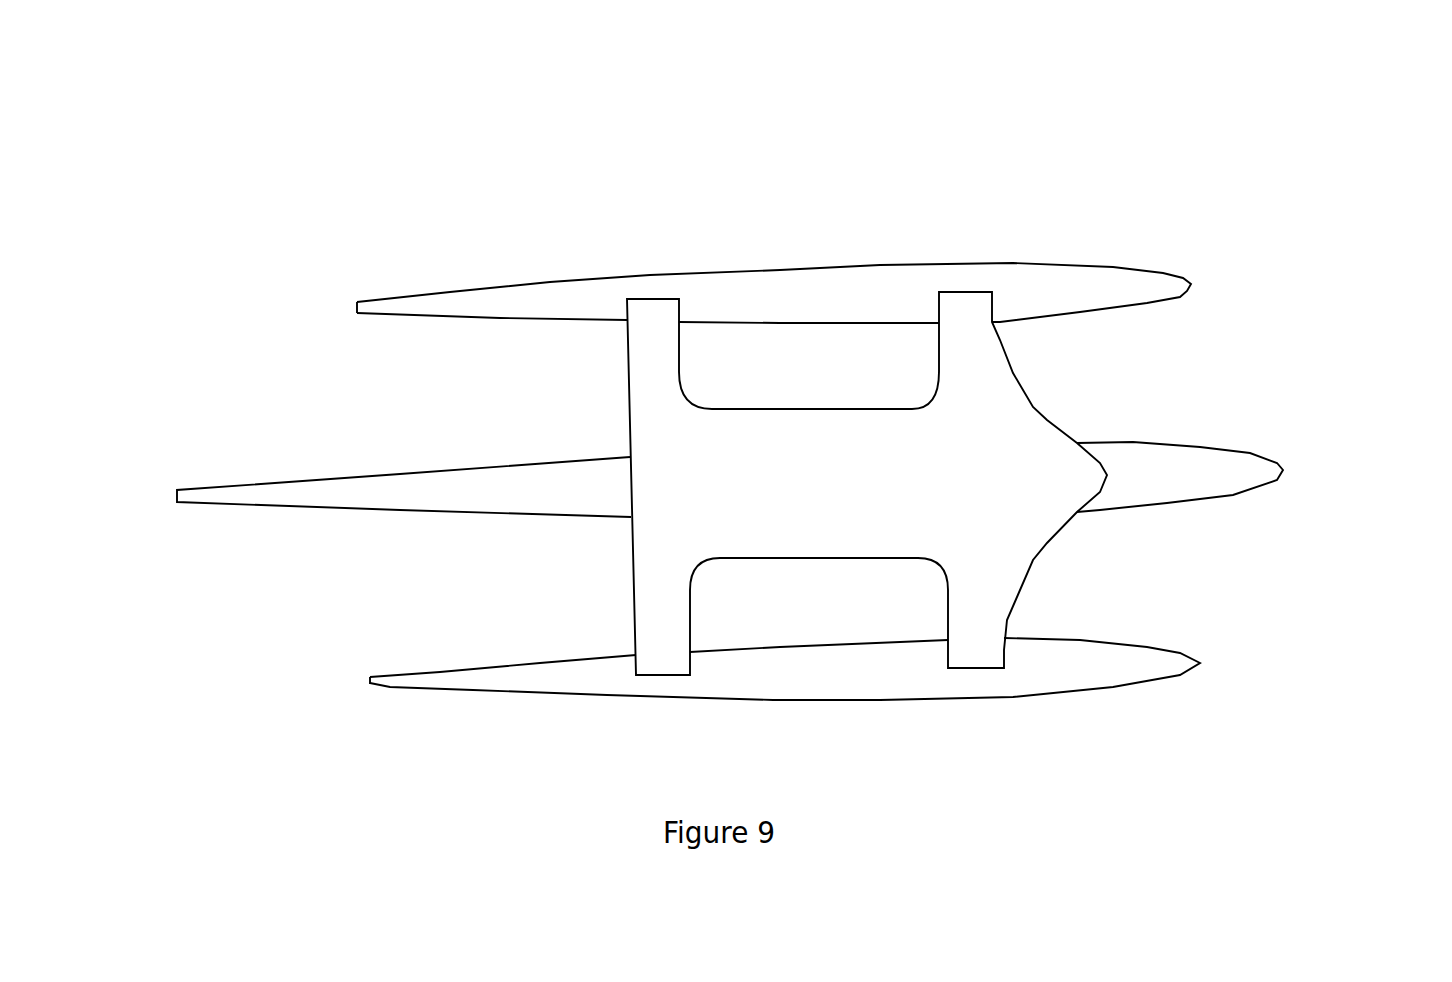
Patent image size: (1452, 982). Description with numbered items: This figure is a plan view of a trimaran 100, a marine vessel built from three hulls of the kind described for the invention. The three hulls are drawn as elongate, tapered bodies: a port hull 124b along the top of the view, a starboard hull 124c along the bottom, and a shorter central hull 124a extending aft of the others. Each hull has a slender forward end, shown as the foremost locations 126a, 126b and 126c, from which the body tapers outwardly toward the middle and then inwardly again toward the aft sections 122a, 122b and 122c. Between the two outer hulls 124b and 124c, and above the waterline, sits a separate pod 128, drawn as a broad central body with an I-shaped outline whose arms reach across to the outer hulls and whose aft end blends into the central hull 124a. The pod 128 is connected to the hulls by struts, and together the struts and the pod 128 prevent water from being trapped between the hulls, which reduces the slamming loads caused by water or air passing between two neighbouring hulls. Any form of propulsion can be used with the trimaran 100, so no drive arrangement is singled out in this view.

The trimaran 100 is at (1213, 164).
The pod 128 is at (836, 478).
The wing 124a is at (1247, 468).
The wing 124b is at (1157, 285).
The wing 124c is at (1158, 668).
The wing root section 122a is at (1136, 470).
The wing root section 122b is at (1027, 285).
The wing root section 122c is at (1025, 672).
The wing tip 126a is at (288, 496).
The wing tip 126b is at (460, 312).
The wing tip 126c is at (403, 684).